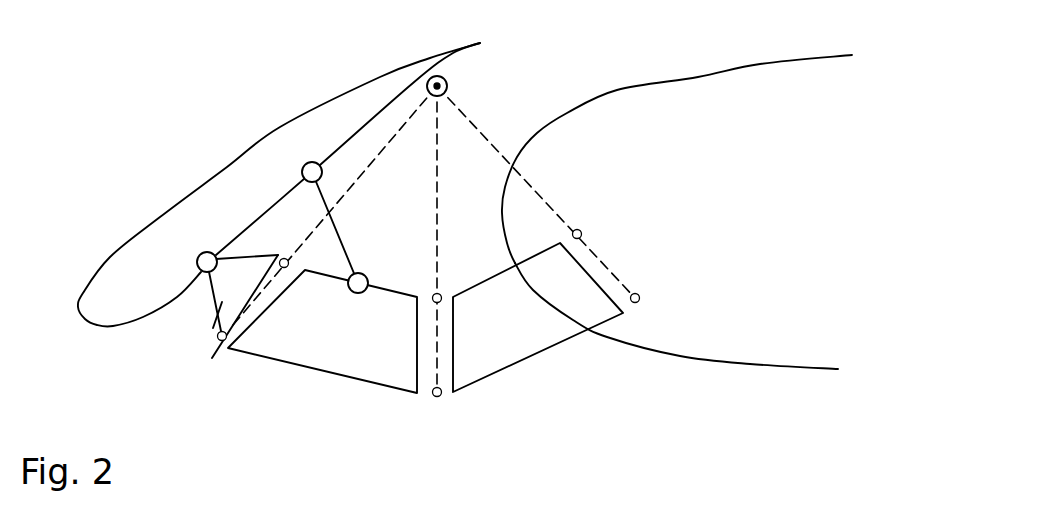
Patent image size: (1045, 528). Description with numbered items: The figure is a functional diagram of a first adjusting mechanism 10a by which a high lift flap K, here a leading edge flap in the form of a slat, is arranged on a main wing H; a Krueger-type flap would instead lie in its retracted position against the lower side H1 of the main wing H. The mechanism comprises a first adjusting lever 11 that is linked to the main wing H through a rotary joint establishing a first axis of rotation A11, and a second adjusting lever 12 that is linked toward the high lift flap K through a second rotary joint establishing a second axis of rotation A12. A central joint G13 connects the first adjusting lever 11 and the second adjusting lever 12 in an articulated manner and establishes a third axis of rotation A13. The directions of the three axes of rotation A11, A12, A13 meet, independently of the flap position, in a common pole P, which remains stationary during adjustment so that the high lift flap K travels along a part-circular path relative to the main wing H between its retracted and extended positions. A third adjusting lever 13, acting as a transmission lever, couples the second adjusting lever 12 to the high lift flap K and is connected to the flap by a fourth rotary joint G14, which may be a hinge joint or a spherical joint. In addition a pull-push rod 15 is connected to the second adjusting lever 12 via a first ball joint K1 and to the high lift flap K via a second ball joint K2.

The high lift flap K is at (248, 200).
The first ball joint K1 is at (366, 280).
The second ball joint K2 is at (312, 162).
The common pole P is at (443, 73).
The main wing H is at (752, 108).
The lower side of the main wing H1 is at (680, 356).
The first adjusting mechanism 10a is at (417, 382).
The first adjusting lever 11 is at (543, 340).
The second adjusting lever 12 is at (326, 360).
The third adjusting lever 13 is at (210, 308).
The pull-push rod 15 is at (337, 228).
The first axis of rotation A11 is at (593, 247).
The second axis of rotation A12 is at (235, 322).
The third axis of rotation A13 is at (440, 322).
The central joint G13 is at (433, 398).
The fourth rotary joint G14 is at (203, 273).